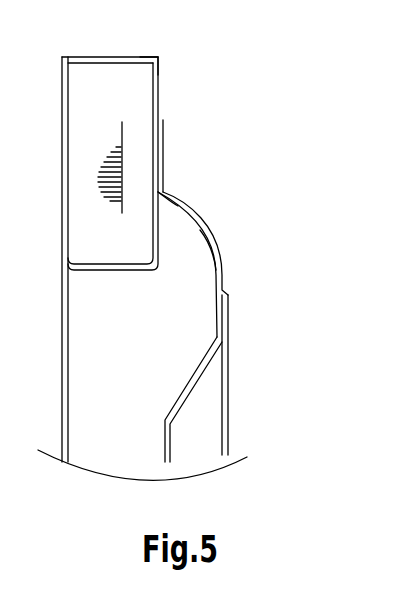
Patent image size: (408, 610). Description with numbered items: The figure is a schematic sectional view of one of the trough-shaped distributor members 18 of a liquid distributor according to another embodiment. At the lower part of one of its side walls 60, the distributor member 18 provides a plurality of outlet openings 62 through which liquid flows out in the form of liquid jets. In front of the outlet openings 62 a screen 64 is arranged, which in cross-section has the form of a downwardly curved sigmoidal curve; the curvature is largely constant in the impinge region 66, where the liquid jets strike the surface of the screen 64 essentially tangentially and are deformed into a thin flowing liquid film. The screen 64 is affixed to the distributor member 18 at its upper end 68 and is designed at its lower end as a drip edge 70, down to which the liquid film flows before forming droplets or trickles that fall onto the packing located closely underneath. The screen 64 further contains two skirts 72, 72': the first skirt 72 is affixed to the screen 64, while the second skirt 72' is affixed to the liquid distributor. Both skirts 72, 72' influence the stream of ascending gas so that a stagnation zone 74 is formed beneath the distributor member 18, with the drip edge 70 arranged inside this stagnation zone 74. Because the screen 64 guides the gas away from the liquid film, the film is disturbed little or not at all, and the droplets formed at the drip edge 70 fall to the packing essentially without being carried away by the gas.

The distributor member 18 is at (162, 93).
The side wall 60 is at (162, 63).
The outlet opening 62 is at (163, 212).
The screen 64 is at (224, 262).
The impinge region 66 is at (205, 234).
The upper end 68 is at (179, 146).
The drip edge 70 is at (171, 438).
The first skirt 72 is at (271, 375).
The second skirt 72' is at (96, 259).
The stagnation zone 74 is at (153, 481).